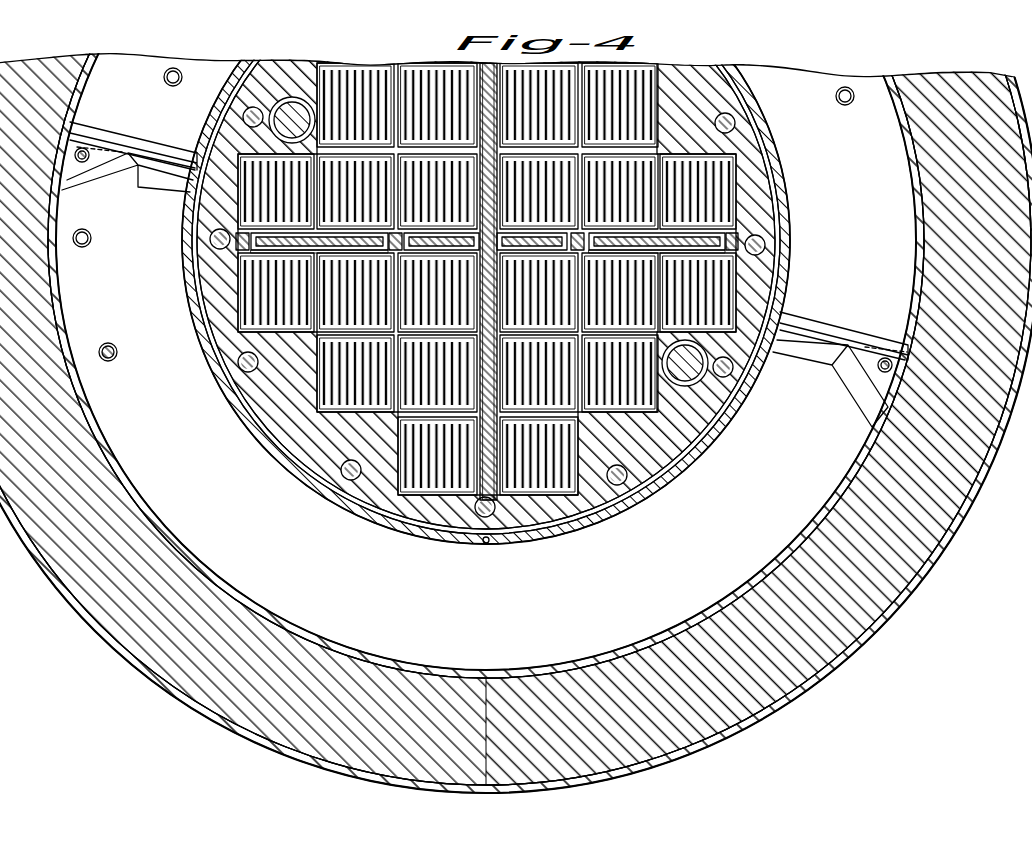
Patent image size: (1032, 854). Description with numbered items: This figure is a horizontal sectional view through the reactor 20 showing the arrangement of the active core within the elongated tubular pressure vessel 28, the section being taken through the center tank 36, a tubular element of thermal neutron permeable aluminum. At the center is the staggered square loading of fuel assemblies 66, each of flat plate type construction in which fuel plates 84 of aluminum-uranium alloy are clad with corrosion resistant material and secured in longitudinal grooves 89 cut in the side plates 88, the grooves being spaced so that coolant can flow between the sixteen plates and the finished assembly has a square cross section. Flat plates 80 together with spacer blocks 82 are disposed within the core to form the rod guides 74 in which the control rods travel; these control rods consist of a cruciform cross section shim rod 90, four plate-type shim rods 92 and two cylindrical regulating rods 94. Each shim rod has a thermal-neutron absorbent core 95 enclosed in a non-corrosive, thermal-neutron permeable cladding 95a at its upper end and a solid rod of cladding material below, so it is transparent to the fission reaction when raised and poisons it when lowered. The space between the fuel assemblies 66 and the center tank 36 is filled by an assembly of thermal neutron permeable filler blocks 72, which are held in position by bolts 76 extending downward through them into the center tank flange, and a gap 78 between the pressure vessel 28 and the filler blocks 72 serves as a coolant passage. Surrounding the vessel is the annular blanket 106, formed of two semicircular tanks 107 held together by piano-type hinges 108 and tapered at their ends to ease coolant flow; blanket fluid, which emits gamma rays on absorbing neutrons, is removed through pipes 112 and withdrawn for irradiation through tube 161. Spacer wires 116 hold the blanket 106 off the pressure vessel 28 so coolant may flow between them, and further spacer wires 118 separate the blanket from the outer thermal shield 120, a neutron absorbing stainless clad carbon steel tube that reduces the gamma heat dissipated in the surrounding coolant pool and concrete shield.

The reactor 20 is at (888, 64).
The pressure vessel 28 is at (288, 470).
The center tank 36 is at (262, 415).
The fuel assemblies 66 is at (437, 269).
The filler blocks 72 is at (262, 70).
The rod guides 74 is at (586, 252).
The bolts 76 is at (243, 116).
The gap 78 is at (434, 526).
The flat plates 80 is at (480, 190).
The spacer blocks 82 is at (582, 240).
The fuel plates 84 is at (400, 180).
The side plates 88 is at (474, 100).
The longitudinal grooves 89 is at (420, 68).
The cruciform shim rod 90 is at (550, 246).
The plate-type shim rods 92 is at (498, 104).
The regulating rods 94 is at (294, 104).
The thermal-neutron absorbent core 95 is at (352, 242).
The cladding 95a is at (382, 262).
The blanket 106 is at (922, 172).
The semicircular tanks 107 is at (922, 218).
The piano-type hinges 108 is at (86, 148).
The pipes 112 is at (176, 68).
The spacer wires 116 is at (486, 546).
The spacer wires 118 is at (486, 680).
The thermal shield 120 is at (404, 673).
The tube 161 is at (845, 86).